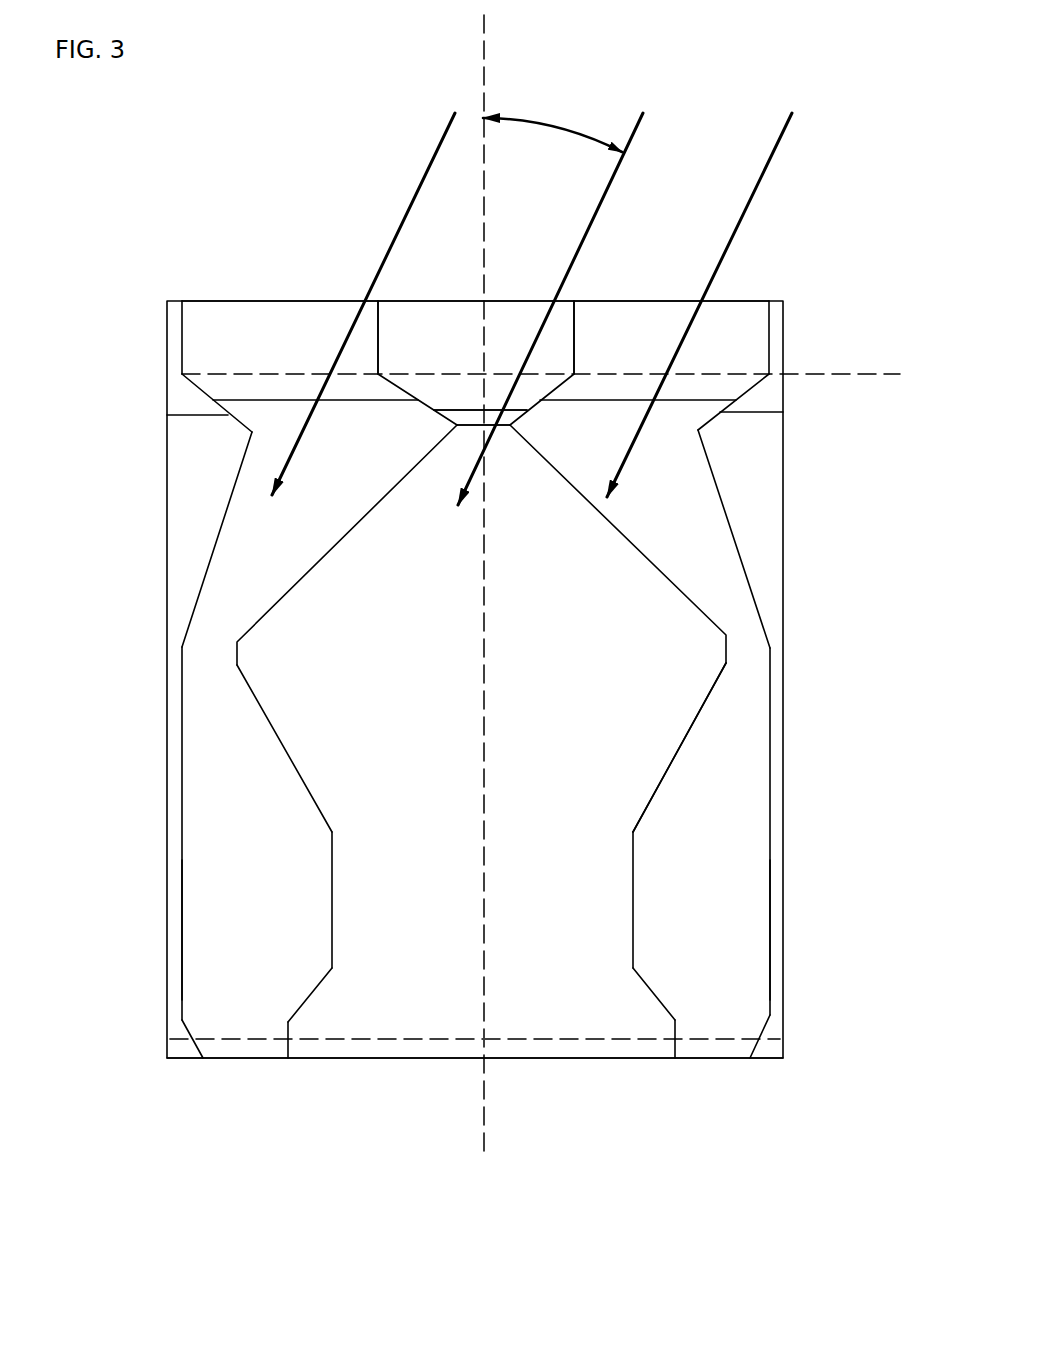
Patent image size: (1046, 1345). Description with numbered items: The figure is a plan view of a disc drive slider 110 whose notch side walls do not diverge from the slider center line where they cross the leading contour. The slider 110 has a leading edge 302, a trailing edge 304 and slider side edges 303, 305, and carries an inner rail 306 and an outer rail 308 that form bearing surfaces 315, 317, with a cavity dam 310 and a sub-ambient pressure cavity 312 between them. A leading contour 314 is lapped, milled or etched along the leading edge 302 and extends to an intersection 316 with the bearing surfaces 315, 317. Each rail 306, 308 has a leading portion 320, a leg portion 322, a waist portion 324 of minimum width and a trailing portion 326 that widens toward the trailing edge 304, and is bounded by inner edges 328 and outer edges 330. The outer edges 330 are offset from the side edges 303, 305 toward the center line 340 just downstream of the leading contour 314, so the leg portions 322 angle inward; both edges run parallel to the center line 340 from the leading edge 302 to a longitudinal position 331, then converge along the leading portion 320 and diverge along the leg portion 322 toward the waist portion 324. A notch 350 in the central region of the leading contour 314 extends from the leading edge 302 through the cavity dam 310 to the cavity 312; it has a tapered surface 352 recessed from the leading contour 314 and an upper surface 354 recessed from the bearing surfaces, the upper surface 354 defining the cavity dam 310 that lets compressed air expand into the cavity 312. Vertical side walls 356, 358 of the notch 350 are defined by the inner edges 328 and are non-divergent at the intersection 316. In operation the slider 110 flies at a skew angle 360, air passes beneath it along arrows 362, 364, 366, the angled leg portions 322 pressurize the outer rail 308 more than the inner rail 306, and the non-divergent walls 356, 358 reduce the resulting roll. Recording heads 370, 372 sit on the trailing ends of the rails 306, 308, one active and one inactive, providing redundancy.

The slider 110 is at (172, 250).
The leading edge 302 is at (272, 300).
The slider side edge 303 is at (784, 1007).
The trailing edge 304 is at (362, 1058).
The slider side edge 305 is at (170, 1013).
The inner rail 306 is at (727, 900).
The outer rail 308 is at (230, 895).
The cavity dam 310 is at (462, 438).
The sub-ambient pressure cavity 312 is at (520, 710).
The leading contour 314 is at (215, 332).
The bearing surface 315 is at (658, 885).
The intersection 316 is at (257, 402).
The bearing surface 317 is at (303, 888).
The leading portion 320 is at (260, 418).
The leg portion 322 is at (255, 550).
The waist portion 324 is at (210, 652).
The trailing portion 326 is at (230, 948).
The inner edge 328 is at (288, 755).
The outer edge 330 is at (183, 780).
The longitudinal position 331 is at (850, 372).
The center line 340 is at (480, 40).
The notch 350 is at (505, 317).
The tapered surface 352 is at (440, 303).
The upper surface 354 is at (505, 428).
The vertical side wall 356 is at (574, 352).
The vertical side wall 358 is at (380, 353).
The skew angle 360 is at (541, 123).
The arrow 362 is at (417, 190).
The arrow 364 is at (593, 228).
The arrow 366 is at (737, 238).
The recording head 370 is at (713, 1050).
The recording head 372 is at (238, 1052).